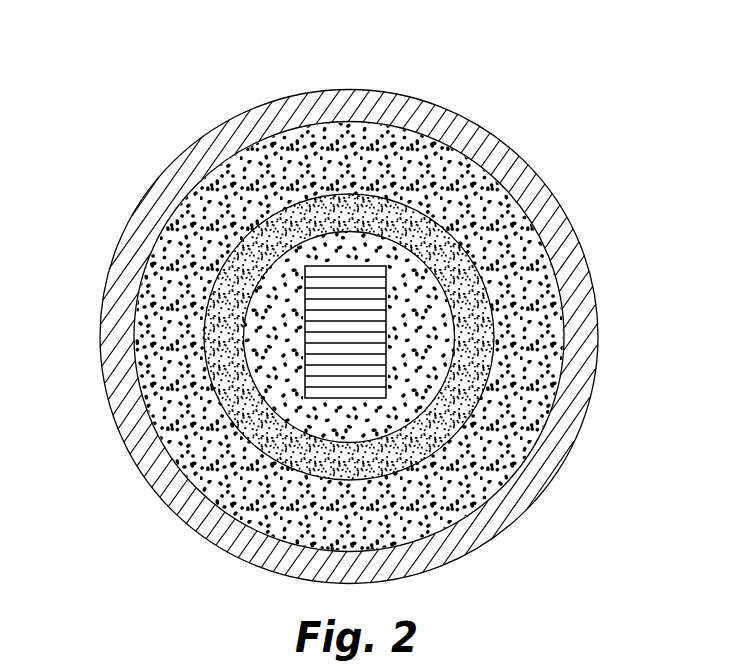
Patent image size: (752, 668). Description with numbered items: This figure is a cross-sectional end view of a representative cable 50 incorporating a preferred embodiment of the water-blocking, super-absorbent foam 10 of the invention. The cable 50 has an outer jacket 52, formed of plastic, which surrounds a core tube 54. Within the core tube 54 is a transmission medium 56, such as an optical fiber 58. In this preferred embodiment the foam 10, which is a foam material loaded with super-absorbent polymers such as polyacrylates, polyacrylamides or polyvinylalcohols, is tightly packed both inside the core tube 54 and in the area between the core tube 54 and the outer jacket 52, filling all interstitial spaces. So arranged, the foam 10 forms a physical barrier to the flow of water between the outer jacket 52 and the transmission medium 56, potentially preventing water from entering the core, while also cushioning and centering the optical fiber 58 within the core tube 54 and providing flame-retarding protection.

The super-absorbent foam 10 is at (275, 317).
The cable 50 is at (464, 72).
The outer jacket 52 is at (515, 141).
The core tube 54 is at (466, 236).
The transmission medium 56 is at (396, 352).
The optical fiber 58 is at (373, 315).